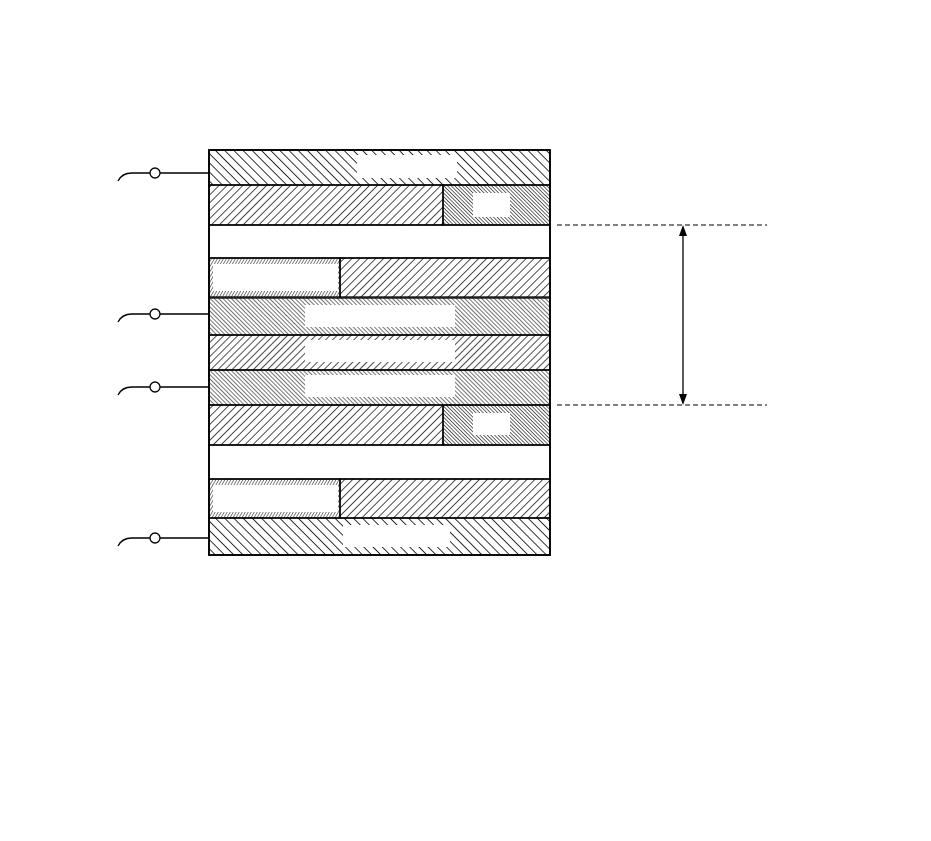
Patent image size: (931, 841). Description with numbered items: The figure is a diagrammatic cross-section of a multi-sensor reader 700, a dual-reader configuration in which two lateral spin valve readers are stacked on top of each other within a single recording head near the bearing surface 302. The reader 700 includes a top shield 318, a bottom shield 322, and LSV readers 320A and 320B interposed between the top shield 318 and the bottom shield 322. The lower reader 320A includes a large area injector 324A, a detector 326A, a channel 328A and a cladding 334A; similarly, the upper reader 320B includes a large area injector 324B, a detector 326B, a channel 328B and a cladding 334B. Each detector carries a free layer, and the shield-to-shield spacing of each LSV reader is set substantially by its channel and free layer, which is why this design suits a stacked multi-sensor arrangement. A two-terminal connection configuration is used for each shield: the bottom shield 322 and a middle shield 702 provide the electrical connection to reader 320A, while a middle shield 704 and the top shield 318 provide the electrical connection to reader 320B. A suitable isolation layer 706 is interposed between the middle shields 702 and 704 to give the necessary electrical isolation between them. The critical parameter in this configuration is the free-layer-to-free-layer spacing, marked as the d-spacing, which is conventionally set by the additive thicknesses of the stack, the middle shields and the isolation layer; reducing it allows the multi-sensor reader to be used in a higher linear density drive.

The reader 700 is at (632, 85).
The bearing surface 302 is at (553, 540).
The top shield 318 is at (500, 165).
The bottom shield 322 is at (482, 543).
The LSV reader 320B is at (419, 185).
The LSV reader 320A is at (413, 522).
The large area injector 324B is at (243, 258).
The large area injector 324A is at (232, 518).
The cladding 334B is at (357, 277).
The cladding 334A is at (337, 432).
The channel 328B is at (472, 237).
The channel 328A is at (462, 467).
The detector 326B is at (542, 220).
The detector 326A is at (535, 433).
The middle shield 704 is at (553, 315).
The isolation layer 706 is at (553, 350).
The middle shield 702 is at (553, 382).